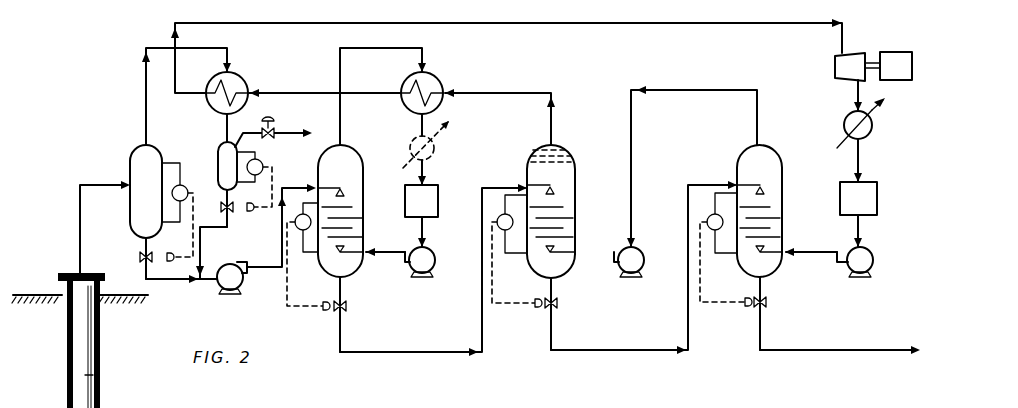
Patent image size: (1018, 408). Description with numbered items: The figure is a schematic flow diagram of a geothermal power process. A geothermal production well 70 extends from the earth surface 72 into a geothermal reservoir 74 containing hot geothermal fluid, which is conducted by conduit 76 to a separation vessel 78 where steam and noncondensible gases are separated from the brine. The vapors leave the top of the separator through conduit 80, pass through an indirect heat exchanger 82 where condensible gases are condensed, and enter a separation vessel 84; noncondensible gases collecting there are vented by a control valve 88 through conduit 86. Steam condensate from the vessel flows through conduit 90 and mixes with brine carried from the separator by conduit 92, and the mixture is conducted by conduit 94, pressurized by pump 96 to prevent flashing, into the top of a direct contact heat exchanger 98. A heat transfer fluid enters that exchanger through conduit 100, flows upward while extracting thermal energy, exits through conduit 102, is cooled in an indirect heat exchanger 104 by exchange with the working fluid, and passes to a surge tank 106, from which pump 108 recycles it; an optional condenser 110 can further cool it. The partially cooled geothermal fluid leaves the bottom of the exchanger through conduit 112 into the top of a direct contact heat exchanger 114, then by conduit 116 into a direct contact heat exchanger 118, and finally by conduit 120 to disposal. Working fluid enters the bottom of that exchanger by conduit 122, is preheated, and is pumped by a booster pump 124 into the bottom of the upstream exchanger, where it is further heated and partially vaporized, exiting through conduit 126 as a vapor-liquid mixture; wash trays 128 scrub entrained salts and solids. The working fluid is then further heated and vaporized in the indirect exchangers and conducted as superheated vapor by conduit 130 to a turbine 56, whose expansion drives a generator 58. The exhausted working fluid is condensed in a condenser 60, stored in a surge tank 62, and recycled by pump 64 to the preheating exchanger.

The turbine 56 is at (853, 53).
The generator 58 is at (893, 52).
The condenser 60 is at (872, 128).
The surge tank 62 is at (877, 200).
The pump 64 is at (840, 268).
The geothermal production well 70 is at (100, 377).
The earth surface 72 is at (40, 295).
The geothermal reservoir 74 is at (50, 357).
The conduit 76 is at (80, 222).
The separation vessel 78 is at (130, 180).
The conduit 80 is at (146, 99).
The indirect heat exchanger 82 is at (243, 78).
The separation vessel 84 is at (218, 172).
The conduit 86 is at (283, 127).
The control valve 88 is at (274, 136).
The conduit 90 is at (205, 240).
The conduit 92 is at (174, 283).
The conduit 94 is at (279, 240).
The pump 96 is at (244, 289).
The direct contact heat exchanger 98 is at (363, 172).
The conduit 100 is at (372, 252).
The conduit 102 is at (341, 124).
The indirect heat exchanger 104 is at (438, 78).
The surge tank 106 is at (438, 199).
The pump 108 is at (436, 262).
The condenser 110 is at (434, 148).
The conduit 112 is at (397, 351).
The direct contact heat exchanger 114 is at (562, 279).
The conduit 116 is at (643, 350).
The direct contact heat exchanger 118 is at (768, 146).
The conduit 120 is at (810, 352).
The conduit 122 is at (792, 252).
The booster pump 124 is at (617, 250).
The conduit 126 is at (551, 124).
The wash trays 128 is at (576, 170).
The conduit 130 is at (492, 23).